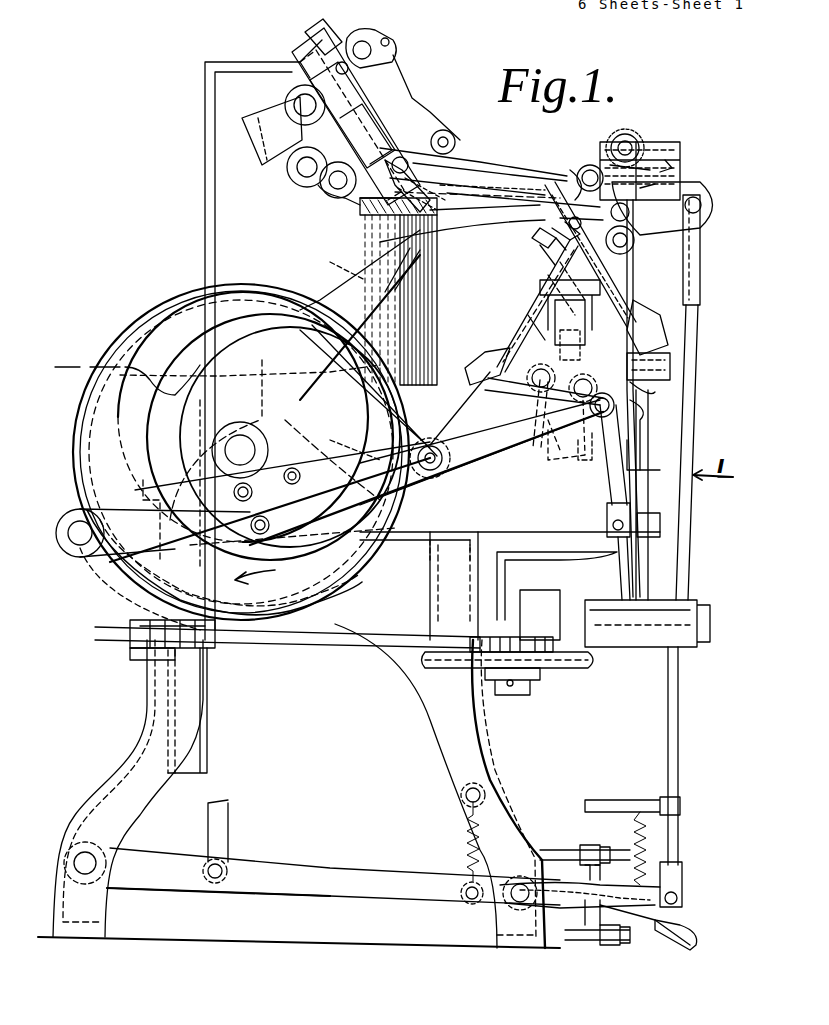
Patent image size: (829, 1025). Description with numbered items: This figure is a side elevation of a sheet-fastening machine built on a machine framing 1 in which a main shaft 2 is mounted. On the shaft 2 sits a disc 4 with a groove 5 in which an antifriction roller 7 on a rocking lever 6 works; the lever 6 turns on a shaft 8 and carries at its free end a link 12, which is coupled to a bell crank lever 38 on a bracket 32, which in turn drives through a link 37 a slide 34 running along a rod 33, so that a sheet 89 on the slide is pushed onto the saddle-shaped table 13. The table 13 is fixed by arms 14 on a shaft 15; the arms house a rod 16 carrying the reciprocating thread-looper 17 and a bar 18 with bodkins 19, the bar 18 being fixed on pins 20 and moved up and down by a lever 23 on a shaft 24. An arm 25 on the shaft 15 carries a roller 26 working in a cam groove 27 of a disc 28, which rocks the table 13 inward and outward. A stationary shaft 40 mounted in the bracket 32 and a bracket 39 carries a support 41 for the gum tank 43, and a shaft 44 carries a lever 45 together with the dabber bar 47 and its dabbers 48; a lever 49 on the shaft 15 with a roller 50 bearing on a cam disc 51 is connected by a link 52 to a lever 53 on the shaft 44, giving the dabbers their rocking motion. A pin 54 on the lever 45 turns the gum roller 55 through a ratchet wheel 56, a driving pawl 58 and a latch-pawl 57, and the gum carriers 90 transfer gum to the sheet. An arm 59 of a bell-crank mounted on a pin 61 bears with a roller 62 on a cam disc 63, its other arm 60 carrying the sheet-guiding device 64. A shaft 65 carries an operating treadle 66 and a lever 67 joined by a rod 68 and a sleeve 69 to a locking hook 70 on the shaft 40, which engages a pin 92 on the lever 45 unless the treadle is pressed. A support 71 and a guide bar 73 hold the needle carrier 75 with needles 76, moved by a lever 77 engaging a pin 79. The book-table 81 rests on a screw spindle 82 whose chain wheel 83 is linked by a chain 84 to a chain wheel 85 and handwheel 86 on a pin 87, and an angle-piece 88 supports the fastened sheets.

The machine framing 1 is at (460, 775).
The main shaft 2 is at (240, 436).
The disc 4 is at (290, 604).
The groove 5 is at (355, 565).
The rocking lever 6 is at (507, 428).
The antifriction roller 7 is at (268, 540).
The shaft 8 is at (82, 545).
The link 12 is at (613, 483).
The saddle-shaped table 13 is at (594, 305).
The arms 14 is at (512, 378).
The shaft 15 is at (435, 447).
The rod 16 is at (538, 308).
The reciprocating thread-looper 17 is at (580, 252).
The bar 18 is at (528, 320).
The bodkins 19 is at (552, 282).
The pins 20 is at (583, 458).
The lever 23 is at (493, 358).
The shaft 24 is at (526, 432).
The arm 25 is at (338, 470).
The antifriction roller 26 is at (142, 487).
The cam groove 27 is at (217, 373).
The disc 28 is at (155, 312).
The bracket 32 is at (618, 575).
The rod 33 is at (650, 393).
The slide 34 is at (640, 300).
The link 37 is at (637, 397).
The bell crank lever 38 is at (647, 553).
The bracket 39 is at (555, 180).
The stationary shaft 40 is at (634, 258).
The support 41 is at (668, 194).
The gum tank 43 is at (648, 170).
The shaft 44 is at (630, 214).
The lever 45 is at (568, 170).
The dabber bar 47 is at (535, 235).
The dabbers 48 is at (556, 242).
The lever 49 is at (397, 293).
The antifriction roller 50 is at (350, 450).
The cam disc 51 is at (313, 330).
The link 52 is at (518, 180).
The lever 53 is at (583, 172).
The pin 54 is at (634, 240).
The roller 55 is at (635, 140).
The ratchet wheel 56 is at (625, 134).
The latch-pawl 57 is at (640, 168).
The driving pawl 58 is at (668, 165).
The arm 59 is at (335, 288).
The arm 60 is at (478, 228).
The pin 61 is at (360, 222).
The antifriction roller 62 is at (291, 466).
The cam disc 63 is at (278, 420).
The sheet-guiding device 64 is at (603, 220).
The shaft 65 is at (520, 885).
The operating treadle 66 is at (690, 930).
The lever 67 is at (640, 895).
The rod 68 is at (680, 768).
The sleeve 69 is at (697, 268).
The locking hook 70 is at (705, 188).
The support 71 is at (298, 52).
The guide bar 73 is at (306, 28).
The needle carrier 75 is at (390, 168).
The needles 76 is at (460, 178).
The lever 77 is at (300, 97).
The pin 79 is at (398, 87).
The book-table 81 is at (424, 390).
The screw spindle 82 is at (207, 690).
The chain wheel 83 is at (150, 640).
The chain 84 is at (402, 640).
The chain wheel 85 is at (537, 640).
The handwheel 86 is at (572, 670).
The pin 87 is at (518, 695).
The angle-piece 88 is at (360, 262).
The sheet 89 is at (660, 327).
The gum carriers 90 is at (530, 236).
The pin 92 is at (577, 175).